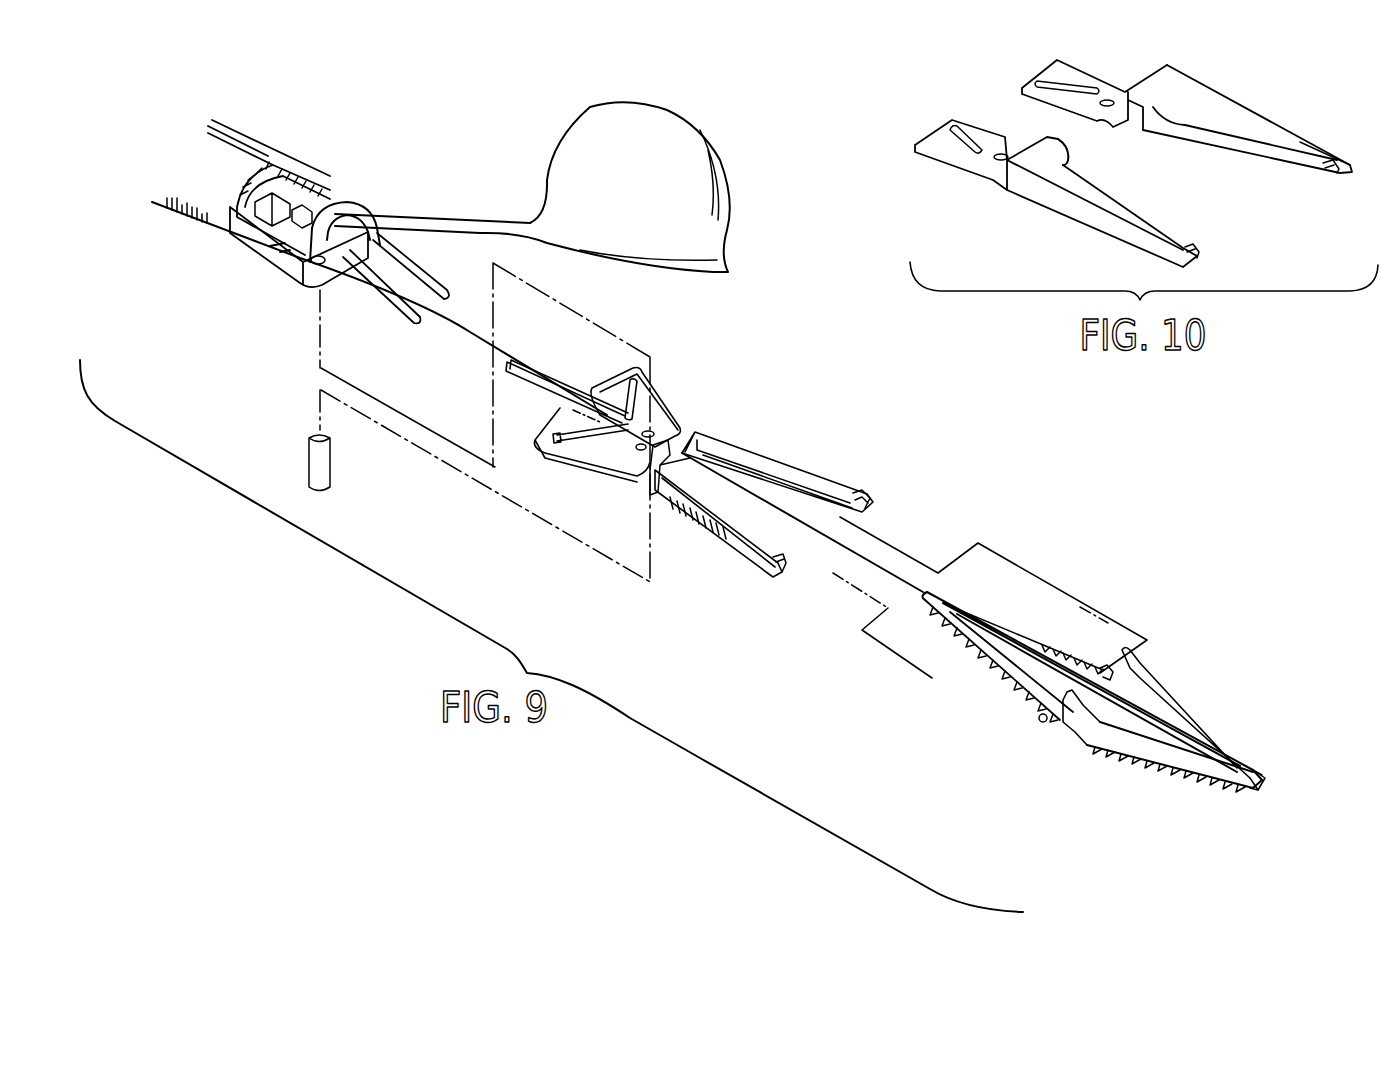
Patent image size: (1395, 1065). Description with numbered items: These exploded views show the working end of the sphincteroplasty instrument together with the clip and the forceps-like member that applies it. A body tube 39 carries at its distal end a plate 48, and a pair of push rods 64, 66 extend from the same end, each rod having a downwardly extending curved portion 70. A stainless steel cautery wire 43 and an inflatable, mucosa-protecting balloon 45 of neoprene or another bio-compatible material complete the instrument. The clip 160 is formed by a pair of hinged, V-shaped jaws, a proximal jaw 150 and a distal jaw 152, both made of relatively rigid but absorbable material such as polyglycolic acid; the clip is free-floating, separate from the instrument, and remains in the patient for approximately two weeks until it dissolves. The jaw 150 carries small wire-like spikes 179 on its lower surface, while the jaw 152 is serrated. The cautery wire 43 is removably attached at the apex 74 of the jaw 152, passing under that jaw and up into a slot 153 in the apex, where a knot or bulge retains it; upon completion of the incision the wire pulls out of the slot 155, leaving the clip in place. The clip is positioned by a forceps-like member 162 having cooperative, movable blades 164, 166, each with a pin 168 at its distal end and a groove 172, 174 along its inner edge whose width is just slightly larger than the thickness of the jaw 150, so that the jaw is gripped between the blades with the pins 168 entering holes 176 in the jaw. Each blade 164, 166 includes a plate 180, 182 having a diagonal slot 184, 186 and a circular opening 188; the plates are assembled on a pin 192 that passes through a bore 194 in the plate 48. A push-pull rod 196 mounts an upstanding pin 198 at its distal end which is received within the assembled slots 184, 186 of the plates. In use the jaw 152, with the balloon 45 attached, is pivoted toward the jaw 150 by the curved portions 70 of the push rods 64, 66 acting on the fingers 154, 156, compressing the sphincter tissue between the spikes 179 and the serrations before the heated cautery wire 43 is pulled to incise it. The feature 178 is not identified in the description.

In FIG. 9, the body tube 39 is at (250, 139).
In FIG. 9, the cautery wire 43 is at (880, 563).
In FIG. 9, the inflatable balloon 45 is at (650, 200).
In FIG. 9, the plate 48 is at (253, 243).
In FIG. 9, the push rod 64 is at (368, 277).
In FIG. 9, the push rod 66 is at (407, 260).
In FIG. 9, the curved portion 70 is at (438, 281).
In FIG. 9, the apex 74 is at (1253, 790).
In FIG. 9, the proximal jaw 150 is at (1007, 625).
In FIG. 9, the distal jaw 152 is at (1180, 713).
In FIG. 9, the slot 153 is at (1267, 790).
In FIG. 9, the finger 154 is at (1133, 663).
In FIG. 9, the slot 155 is at (1262, 772).
In FIG. 9, the finger 156 is at (1080, 742).
In FIG. 9, the clip 160 is at (1108, 716).
In FIG. 9, the forceps-like member 162 is at (720, 474).
In FIG. 10, the forceps-like member 162 is at (1119, 161).
In FIG. 9, the blade 164 is at (810, 477).
In FIG. 10, the blade 164 is at (1267, 123).
In FIG. 9, the blade 166 is at (748, 548).
In FIG. 10, the blade 166 is at (1102, 222).
In FIG. 9, the pin 168 is at (853, 500).
In FIG. 10, the pin 168 is at (1327, 173).
In FIG. 10, the groove 172 is at (1312, 148).
In FIG. 10, the groove 174 is at (1063, 163).
In FIG. 9, the hole 176 is at (1040, 722).
In FIG. 9, the rack notch 178 is at (1103, 672).
In FIG. 9, the wire-like spikes 179 is at (988, 677).
In FIG. 9, the plate 180 is at (535, 444).
In FIG. 10, the plate 180 is at (1077, 73).
In FIG. 9, the plate 182 is at (610, 384).
In FIG. 10, the plate 182 is at (947, 147).
In FIG. 9, the diagonal slot 184 is at (585, 438).
In FIG. 10, the diagonal slot 184 is at (1038, 72).
In FIG. 9, the diagonal slot 186 is at (637, 392).
In FIG. 10, the diagonal slot 186 is at (937, 123).
In FIG. 9, the circular opening 188 is at (641, 450).
In FIG. 10, the circular opening 188 is at (998, 162).
In FIG. 9, the pin 192 is at (333, 460).
In FIG. 9, the bore 194 is at (317, 266).
In FIG. 9, the push-pull rod 196 is at (527, 374).
In FIG. 9, the upstanding pin 198 is at (640, 413).